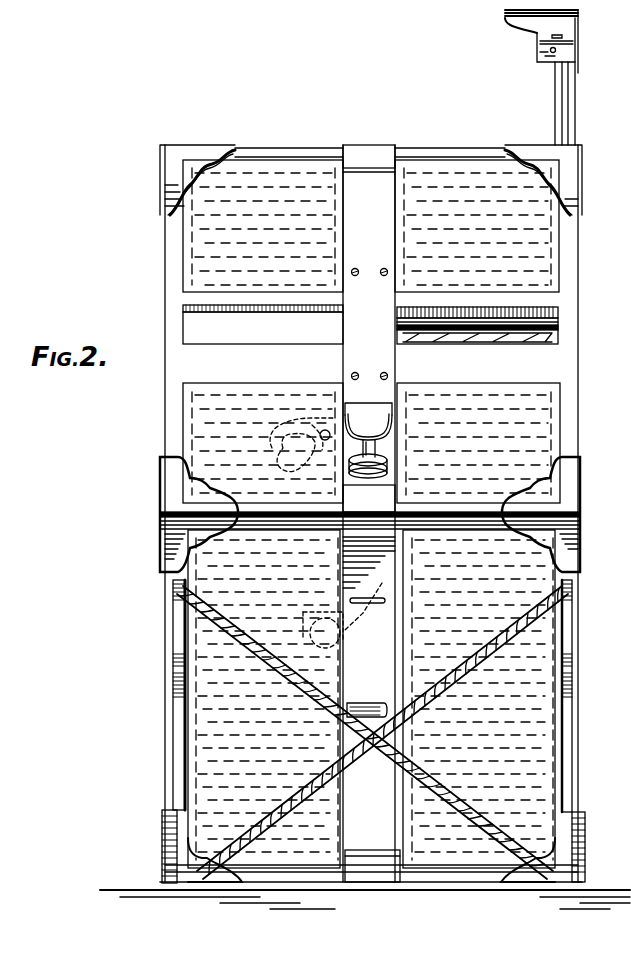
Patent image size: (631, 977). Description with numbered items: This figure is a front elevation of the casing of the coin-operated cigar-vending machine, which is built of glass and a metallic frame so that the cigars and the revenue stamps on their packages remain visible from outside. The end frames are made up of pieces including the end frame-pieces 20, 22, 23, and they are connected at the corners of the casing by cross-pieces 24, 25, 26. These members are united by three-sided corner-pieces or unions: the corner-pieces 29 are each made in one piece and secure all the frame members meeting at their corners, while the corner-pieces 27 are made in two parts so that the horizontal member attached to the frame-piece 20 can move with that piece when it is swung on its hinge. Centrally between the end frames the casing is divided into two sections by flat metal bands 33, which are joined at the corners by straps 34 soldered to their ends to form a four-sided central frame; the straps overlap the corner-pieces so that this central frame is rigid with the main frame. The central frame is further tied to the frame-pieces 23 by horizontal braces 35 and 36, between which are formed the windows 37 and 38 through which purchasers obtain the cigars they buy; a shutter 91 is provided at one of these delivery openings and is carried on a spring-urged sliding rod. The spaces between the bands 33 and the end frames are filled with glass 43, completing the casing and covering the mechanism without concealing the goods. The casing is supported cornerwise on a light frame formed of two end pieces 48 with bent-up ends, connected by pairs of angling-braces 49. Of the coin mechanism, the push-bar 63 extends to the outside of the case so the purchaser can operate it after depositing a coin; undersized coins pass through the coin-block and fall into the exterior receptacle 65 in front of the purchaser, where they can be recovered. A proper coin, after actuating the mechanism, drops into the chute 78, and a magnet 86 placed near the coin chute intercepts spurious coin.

The end frame-piece 20 is at (578, 107).
The end frame-piece 22 is at (165, 575).
The end frame-piece 23 is at (167, 270).
The cross-piece 24 is at (288, 155).
The cross-piece 25 is at (437, 504).
The cross-piece 26 is at (448, 873).
The corner-piece 27 is at (371, 180).
The corner-piece 29 is at (597, 842).
The flat metal band 33 is at (369, 513).
The strap 34 is at (371, 513).
The horizontal brace 35 is at (370, 303).
The horizontal brace 36 is at (371, 363).
The window 37 is at (553, 326).
The window 38 is at (335, 325).
The glass 43 is at (371, 514).
The end piece 48 is at (178, 748).
The angling-brace 49 is at (350, 715).
The push-bar 63 is at (363, 445).
The receptacle 65 is at (370, 707).
The chute 78 is at (337, 613).
The magnet 86 is at (282, 466).
The shutter 91 is at (263, 328).